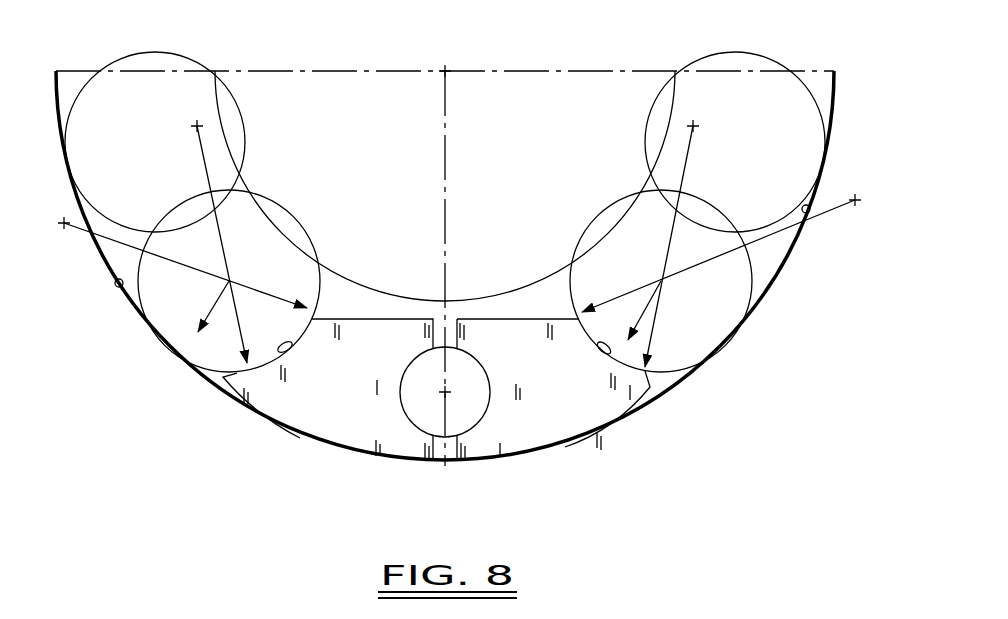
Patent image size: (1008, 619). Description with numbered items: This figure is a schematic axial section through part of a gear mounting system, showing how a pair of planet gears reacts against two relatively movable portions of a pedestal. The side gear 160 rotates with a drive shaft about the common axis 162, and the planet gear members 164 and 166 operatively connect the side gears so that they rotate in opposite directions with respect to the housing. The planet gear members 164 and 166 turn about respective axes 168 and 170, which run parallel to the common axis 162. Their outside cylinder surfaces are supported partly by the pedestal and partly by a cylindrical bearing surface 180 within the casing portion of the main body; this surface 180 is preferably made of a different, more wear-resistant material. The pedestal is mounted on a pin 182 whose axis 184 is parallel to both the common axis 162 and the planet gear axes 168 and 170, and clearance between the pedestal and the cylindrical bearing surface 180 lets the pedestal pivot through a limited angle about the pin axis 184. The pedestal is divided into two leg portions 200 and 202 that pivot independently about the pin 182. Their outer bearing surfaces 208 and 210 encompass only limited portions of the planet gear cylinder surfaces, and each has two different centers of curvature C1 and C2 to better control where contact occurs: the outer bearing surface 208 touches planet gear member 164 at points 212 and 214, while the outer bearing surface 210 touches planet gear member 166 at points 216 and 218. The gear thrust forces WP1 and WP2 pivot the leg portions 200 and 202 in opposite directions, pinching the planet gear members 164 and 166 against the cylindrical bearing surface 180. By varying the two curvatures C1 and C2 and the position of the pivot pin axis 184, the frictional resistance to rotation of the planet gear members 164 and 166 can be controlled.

The side gear 160 is at (320, 112).
The common axis 162 is at (448, 73).
The planet gear member 164 is at (260, 225).
The planet gear member 166 is at (220, 140).
The planet gear axis 168 is at (229, 281).
The planet gear axis 170 is at (661, 281).
The cylindrical bearing surface 180 is at (115, 284).
The pin 182 is at (460, 425).
The pin axis 184 is at (448, 390).
The pedestal leg portion 200 is at (350, 428).
The pedestal leg portion 202 is at (548, 422).
The outer bearing surface 208 is at (290, 358).
The outer bearing surface 210 is at (601, 349).
The contact point 212 is at (243, 382).
The contact point 214 is at (308, 312).
The contact point 216 is at (660, 395).
The contact point 218 is at (576, 317).
The center of curvature C1 is at (710, 108).
The center of curvature C2 is at (62, 232).
The gear thrust force WP1 is at (218, 303).
The gear thrust force WP2 is at (640, 290).